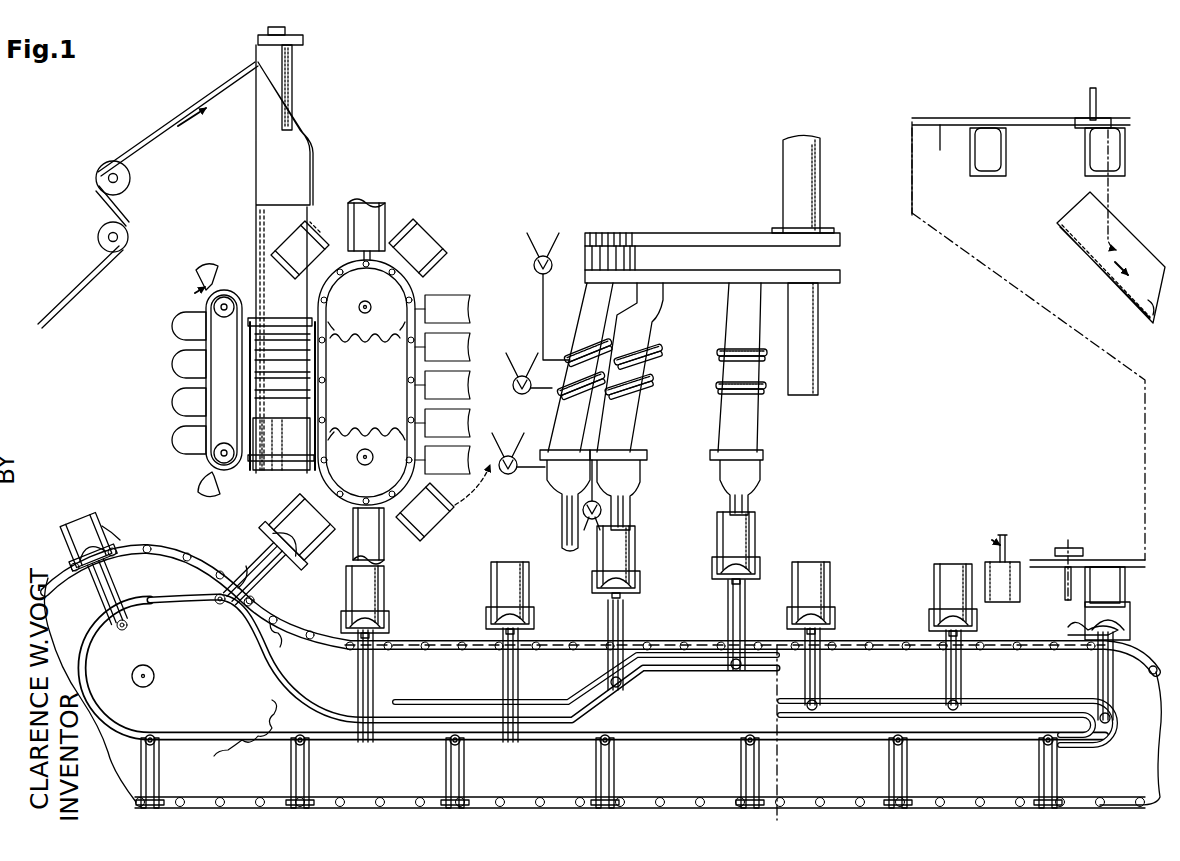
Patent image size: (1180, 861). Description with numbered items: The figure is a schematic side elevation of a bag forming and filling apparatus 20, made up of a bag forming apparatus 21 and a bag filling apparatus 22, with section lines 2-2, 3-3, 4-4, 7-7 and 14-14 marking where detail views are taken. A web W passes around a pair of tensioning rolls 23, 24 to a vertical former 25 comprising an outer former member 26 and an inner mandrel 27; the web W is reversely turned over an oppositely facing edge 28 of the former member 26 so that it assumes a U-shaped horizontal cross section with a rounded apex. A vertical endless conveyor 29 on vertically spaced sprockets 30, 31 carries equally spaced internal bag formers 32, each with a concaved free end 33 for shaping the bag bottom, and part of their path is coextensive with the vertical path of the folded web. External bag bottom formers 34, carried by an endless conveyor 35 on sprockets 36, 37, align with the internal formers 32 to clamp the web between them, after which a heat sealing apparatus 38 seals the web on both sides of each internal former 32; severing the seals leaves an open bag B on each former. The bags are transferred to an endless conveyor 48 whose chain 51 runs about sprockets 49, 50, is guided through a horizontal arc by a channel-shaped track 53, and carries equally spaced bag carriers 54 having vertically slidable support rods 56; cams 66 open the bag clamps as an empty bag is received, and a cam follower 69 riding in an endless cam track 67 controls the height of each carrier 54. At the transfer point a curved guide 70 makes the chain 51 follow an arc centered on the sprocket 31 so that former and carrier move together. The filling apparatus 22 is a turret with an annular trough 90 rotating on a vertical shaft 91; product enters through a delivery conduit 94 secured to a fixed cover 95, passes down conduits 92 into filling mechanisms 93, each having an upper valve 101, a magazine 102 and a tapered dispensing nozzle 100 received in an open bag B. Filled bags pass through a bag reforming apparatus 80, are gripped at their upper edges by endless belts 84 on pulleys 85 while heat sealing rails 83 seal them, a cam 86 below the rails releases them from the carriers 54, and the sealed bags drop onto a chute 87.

The section line 2- 2 is at (343, 88).
The section line 3- 3 is at (352, 485).
The section line 4- 4 is at (705, 533).
The section line 7- 7 is at (1103, 585).
The section line 14- 14 is at (720, 633).
The bag forming and filling apparatus 20 is at (546, 193).
The bag forming apparatus 21 is at (408, 190).
The bag filling apparatus 22 is at (872, 380).
The tensioning roll 23 is at (98, 240).
The tensioning roll 24 is at (130, 172).
The former 25 is at (254, 145).
The outer former member 26 is at (268, 175).
The inner mandrel 27 is at (293, 85).
The oppositely facing edge 28 is at (264, 87).
The endless conveyor 29 is at (327, 402).
The sprocket 30 is at (372, 338).
The sprocket 31 is at (364, 428).
The internal bag former 32 is at (384, 228).
The concaved free end 33 is at (367, 204).
The external bag bottom former 34 is at (185, 383).
The endless conveyor 35 is at (186, 340).
The sprocket 36 is at (198, 305).
The sprocket 37 is at (200, 457).
The heat sealing apparatus 38 is at (270, 475).
The endless conveyor 48 is at (107, 510).
The sprocket 49 is at (290, 688).
The sprocket 50 is at (1063, 653).
The chain 51 is at (537, 795).
The channel-shaped track 53 is at (398, 655).
The bag carrier 54 is at (76, 524).
The support rod 56 is at (604, 612).
The cam 66 is at (263, 543).
The cam track 67 is at (668, 677).
The cam follower 69 is at (122, 629).
The curved guide 70 is at (190, 541).
The bag reforming apparatus 80 is at (992, 602).
The heat sealing rail 83 is at (933, 133).
The endless belt 84 is at (1030, 120).
The pulley 85 is at (1108, 120).
The cam 86 is at (1069, 627).
The chute 87 is at (1073, 240).
The annular trough 90 is at (843, 263).
The vertical shaft 91 is at (810, 344).
The conduit 92 is at (590, 320).
The filling mechanism 93 is at (552, 427).
The delivery conduit 94 is at (821, 183).
The fixed cover 95 is at (707, 239).
The dispensing nozzle 100 is at (547, 480).
The upper valve 101 is at (640, 370).
The magazine 102 is at (623, 438).
The web W is at (80, 300).
The bag B is at (990, 167).